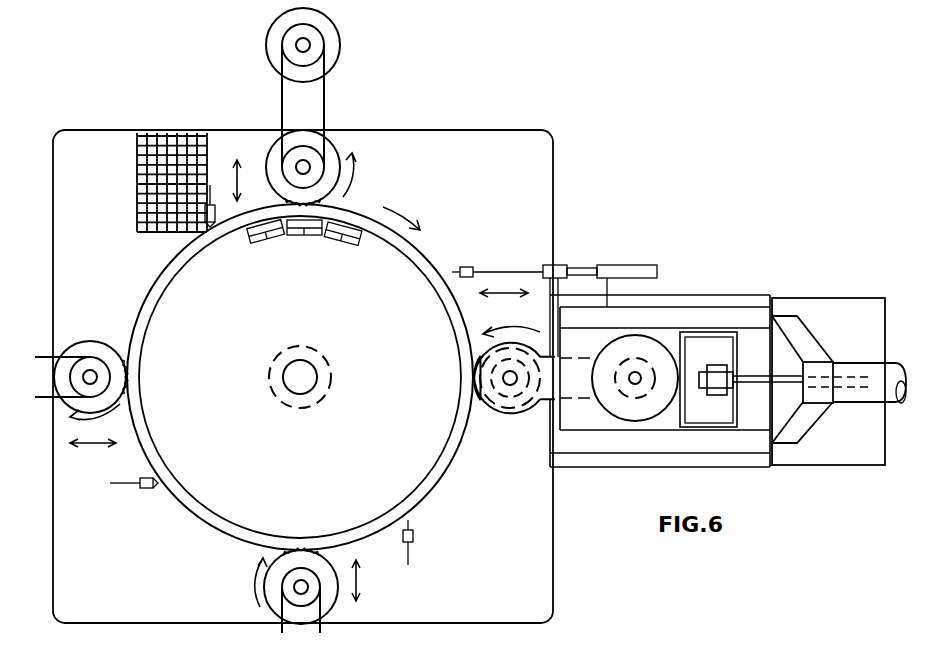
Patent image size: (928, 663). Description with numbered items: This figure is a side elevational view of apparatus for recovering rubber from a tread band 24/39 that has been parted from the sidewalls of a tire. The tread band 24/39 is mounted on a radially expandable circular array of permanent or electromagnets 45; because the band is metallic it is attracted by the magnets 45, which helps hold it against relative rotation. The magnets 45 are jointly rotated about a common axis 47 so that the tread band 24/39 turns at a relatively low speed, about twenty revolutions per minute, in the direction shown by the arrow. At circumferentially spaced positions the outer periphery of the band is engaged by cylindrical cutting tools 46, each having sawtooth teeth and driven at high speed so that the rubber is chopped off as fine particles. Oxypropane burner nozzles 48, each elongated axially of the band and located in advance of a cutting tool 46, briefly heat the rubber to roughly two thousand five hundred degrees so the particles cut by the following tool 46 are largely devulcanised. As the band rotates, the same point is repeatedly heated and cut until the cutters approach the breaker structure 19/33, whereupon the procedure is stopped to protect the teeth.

The breaker structure 19 is at (300, 377).
The breaker structure 33 is at (402, 295).
The tread band 24 is at (693, 393).
The tread band 39 is at (512, 480).
The magnets 45 is at (295, 236).
The cylindrical cutting tool 46 is at (328, 150).
The common axis 47 is at (303, 386).
The oxypropane burner nozzle 48 is at (212, 205).